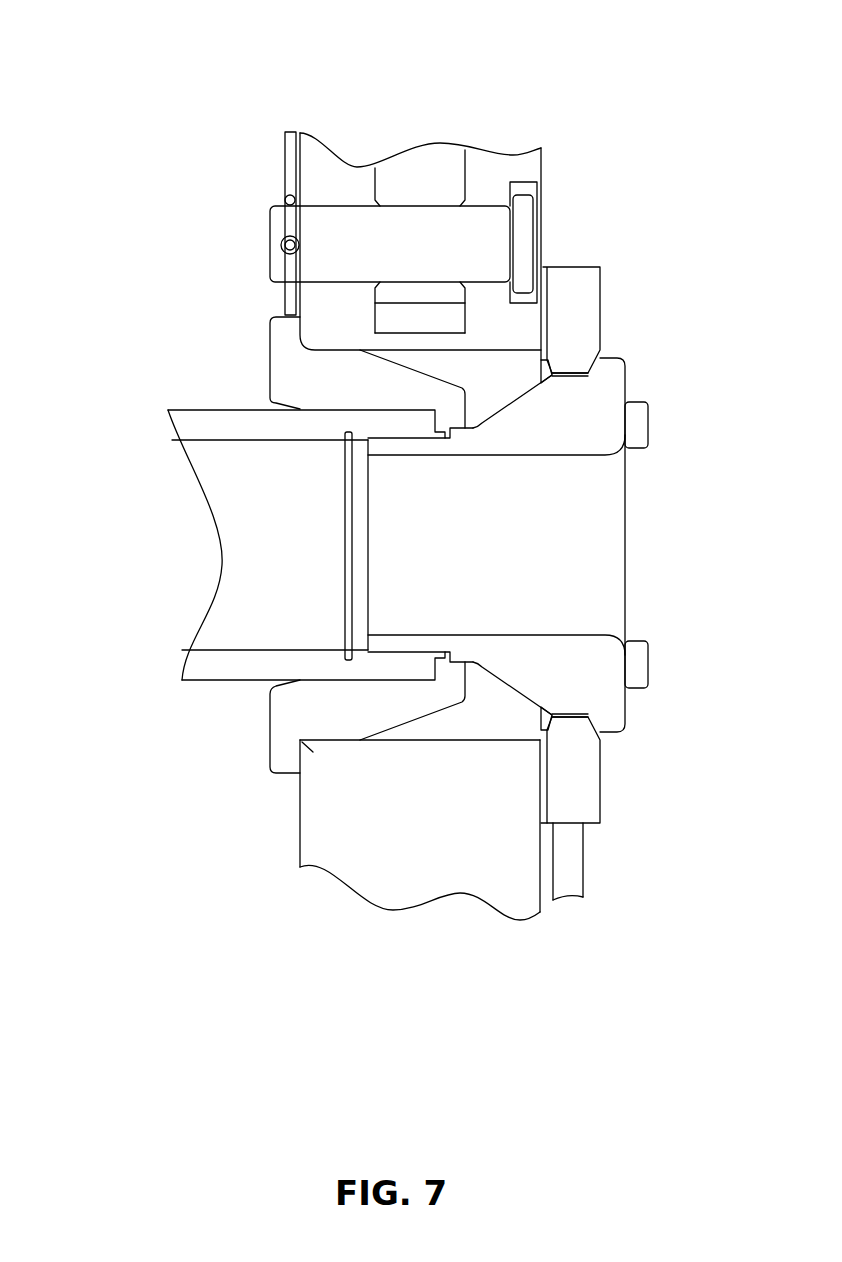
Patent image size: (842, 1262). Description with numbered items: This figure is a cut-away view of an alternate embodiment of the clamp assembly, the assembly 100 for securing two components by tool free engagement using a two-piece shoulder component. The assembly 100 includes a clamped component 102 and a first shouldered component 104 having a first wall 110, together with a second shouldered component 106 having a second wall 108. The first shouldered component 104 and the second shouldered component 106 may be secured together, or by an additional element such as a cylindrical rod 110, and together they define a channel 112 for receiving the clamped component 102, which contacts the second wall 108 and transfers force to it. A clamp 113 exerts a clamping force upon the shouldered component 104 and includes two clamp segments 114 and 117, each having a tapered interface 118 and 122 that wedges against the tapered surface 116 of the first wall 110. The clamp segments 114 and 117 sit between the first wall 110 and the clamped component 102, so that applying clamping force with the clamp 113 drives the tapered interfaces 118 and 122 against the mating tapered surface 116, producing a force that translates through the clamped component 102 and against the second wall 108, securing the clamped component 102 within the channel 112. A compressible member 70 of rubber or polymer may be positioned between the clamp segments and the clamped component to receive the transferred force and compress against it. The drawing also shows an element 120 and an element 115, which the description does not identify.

The assembly 100 is at (648, 105).
The clamp 113 is at (598, 238).
The second wall 108 is at (300, 338).
The channel 112 is at (318, 349).
The second shouldered component 106 is at (280, 347).
The tube 120 is at (182, 420).
The first shouldered component 104 is at (608, 417).
The clamp segment 114 is at (570, 316).
The tapered interface 118 is at (600, 349).
The tapered surface 116 is at (588, 376).
The first wall 110 is at (592, 368).
The tapered interface 122 is at (600, 740).
The clamp segment 117 is at (585, 807).
The compressible member 70 is at (548, 812).
The mounting strip 115 is at (585, 862).
The clamped component 102 is at (530, 877).